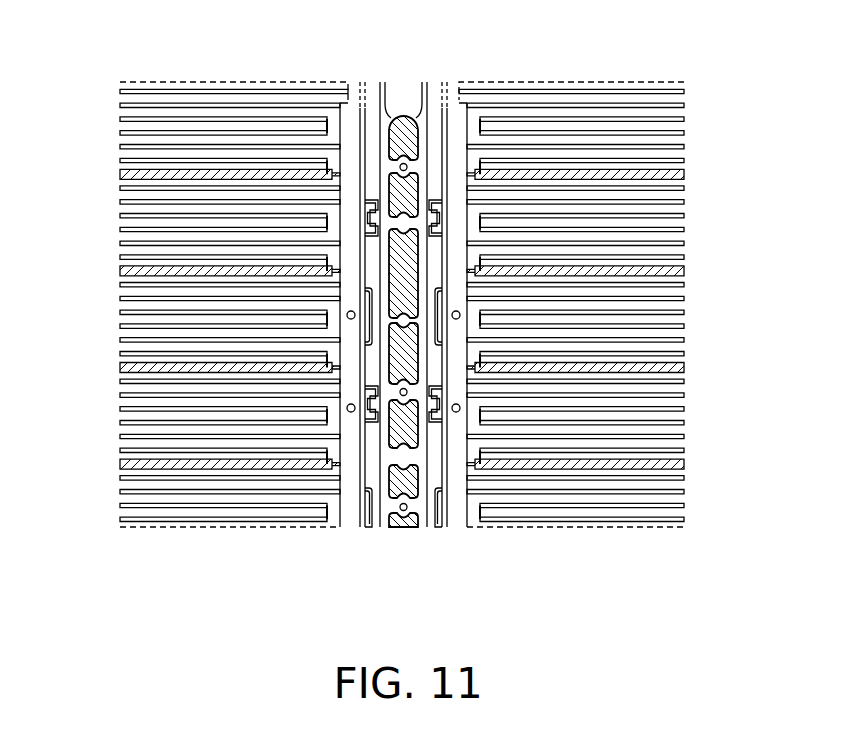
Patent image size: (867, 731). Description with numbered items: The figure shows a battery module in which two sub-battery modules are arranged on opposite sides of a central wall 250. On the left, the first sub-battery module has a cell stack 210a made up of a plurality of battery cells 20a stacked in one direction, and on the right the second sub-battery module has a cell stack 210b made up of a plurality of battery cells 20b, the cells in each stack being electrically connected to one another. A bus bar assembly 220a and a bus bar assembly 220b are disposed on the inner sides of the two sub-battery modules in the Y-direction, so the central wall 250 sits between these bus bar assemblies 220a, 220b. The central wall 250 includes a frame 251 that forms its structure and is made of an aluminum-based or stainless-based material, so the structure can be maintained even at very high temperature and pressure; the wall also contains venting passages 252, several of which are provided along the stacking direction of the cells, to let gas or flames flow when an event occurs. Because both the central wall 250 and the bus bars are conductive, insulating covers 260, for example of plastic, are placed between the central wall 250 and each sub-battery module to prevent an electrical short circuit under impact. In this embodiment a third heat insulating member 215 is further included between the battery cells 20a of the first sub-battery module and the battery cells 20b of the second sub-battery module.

The battery cells 20a is at (125, 160).
The battery cells 20b is at (684, 158).
The third heat insulating member 215 is at (684, 175).
The cell stack 210a is at (218, 532).
The cell stack 210b is at (585, 532).
The bus bar assembly 220a is at (352, 532).
The bus bar assembly 220b is at (451, 532).
The central wall 250 is at (400, 268).
The frame 251 is at (420, 138).
The venting passage 252 is at (390, 138).
The insulating covers 260 is at (435, 158).